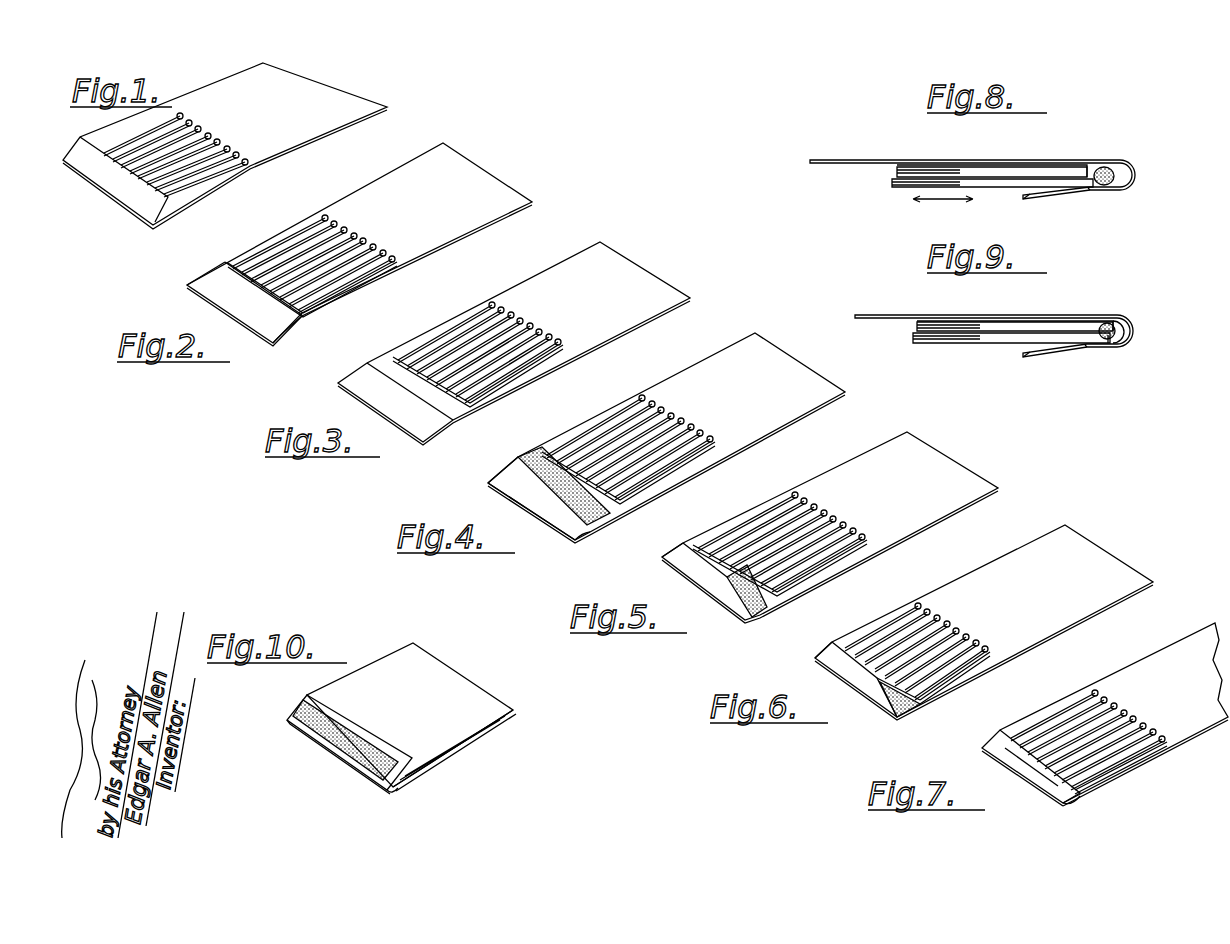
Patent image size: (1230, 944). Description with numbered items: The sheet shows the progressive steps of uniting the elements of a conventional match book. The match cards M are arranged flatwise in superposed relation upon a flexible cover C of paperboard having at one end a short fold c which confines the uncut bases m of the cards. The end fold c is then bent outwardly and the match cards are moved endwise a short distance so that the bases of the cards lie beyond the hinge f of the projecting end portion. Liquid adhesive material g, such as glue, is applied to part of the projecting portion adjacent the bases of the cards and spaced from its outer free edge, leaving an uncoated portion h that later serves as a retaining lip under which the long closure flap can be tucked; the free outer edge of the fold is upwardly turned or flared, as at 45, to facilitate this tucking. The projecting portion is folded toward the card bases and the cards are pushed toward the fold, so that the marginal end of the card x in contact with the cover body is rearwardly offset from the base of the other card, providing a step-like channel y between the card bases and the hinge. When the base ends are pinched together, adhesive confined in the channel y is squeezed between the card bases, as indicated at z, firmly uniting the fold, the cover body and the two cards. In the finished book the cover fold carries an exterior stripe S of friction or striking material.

In FIG. 1, the flexible cover C is at (345, 93).
In FIG. 2, the flexible cover C is at (497, 183).
In FIG. 3, the flexible cover C is at (514, 343).
In FIG. 4, the flexible cover C is at (778, 367).
In FIG. 5, the flexible cover C is at (955, 472).
In FIG. 6, the flexible cover C is at (984, 622).
In FIG. 7, the flexible cover C is at (1203, 630).
In FIG. 8, the flexible cover C is at (897, 160).
In FIG. 9, the flexible cover C is at (883, 316).
In FIG. 10, the flexible cover C is at (445, 680).
In FIG. 1, the match cards M is at (193, 157).
In FIG. 2, the match cards M is at (350, 280).
In FIG. 3, the match cards M is at (527, 337).
In FIG. 4, the match cards M is at (663, 460).
In FIG. 5, the match cards M is at (781, 542).
In FIG. 6, the match cards M is at (950, 640).
In FIG. 7, the match cards M is at (1115, 760).
In FIG. 8, the match cards M is at (892, 183).
In FIG. 9, the match cards M is at (913, 338).
In FIG. 10, the match cards M is at (470, 745).
In FIG. 2, the uncut bases of the cards m is at (236, 256).
In FIG. 3, the uncut bases of the cards m is at (477, 393).
In FIG. 4, the uncut bases of the cards m is at (628, 473).
In FIG. 5, the uncut bases of the cards m is at (780, 568).
In FIG. 1, the end fold c is at (140, 202).
In FIG. 2, the end fold c is at (197, 270).
In FIG. 4, the end fold c is at (490, 483).
In FIG. 5, the end fold c is at (670, 560).
In FIG. 6, the end fold c is at (812, 660).
In FIG. 7, the end fold c is at (1050, 785).
In FIG. 8, the end fold c is at (1088, 192).
In FIG. 9, the end fold c is at (1085, 350).
In FIG. 10, the end fold c is at (357, 772).
In FIG. 2, the hinge f is at (222, 268).
In FIG. 3, the hinge f is at (366, 364).
In FIG. 2, the flared free outer edge 45 is at (283, 340).
In FIG. 4, the flared free outer edge 45 is at (590, 536).
In FIG. 6, the flared free outer edge 45 is at (828, 641).
In FIG. 7, the flared free outer edge 45 is at (992, 737).
In FIG. 8, the flared free outer edge 45 is at (1068, 198).
In FIG. 9, the flared free outer edge 45 is at (1060, 355).
In FIG. 10, the flared free outer edge 45 is at (305, 697).
In FIG. 4, the liquid adhesive material g is at (515, 456).
In FIG. 5, the liquid adhesive material g is at (745, 615).
In FIG. 6, the liquid adhesive material g is at (897, 717).
In FIG. 7, the liquid adhesive material g is at (1065, 804).
In FIG. 8, the liquid adhesive material g is at (1118, 166).
In FIG. 9, the liquid adhesive material g is at (1130, 330).
In FIG. 10, the liquid adhesive material g is at (390, 790).
In FIG. 4, the uncoated portion h is at (560, 512).
In FIG. 5, the card in contact with the cover body x is at (778, 597).
In FIG. 6, the card in contact with the cover body x is at (915, 700).
In FIG. 8, the card in contact with the cover body x is at (1030, 170).
In FIG. 9, the card in contact with the cover body x is at (1063, 320).
In FIG. 9, the step-like channel y is at (1125, 318).
In FIG. 9, the squeezed adhesive material z is at (1108, 345).
In FIG. 10, the exterior stripe of friction or striking material S is at (345, 740).